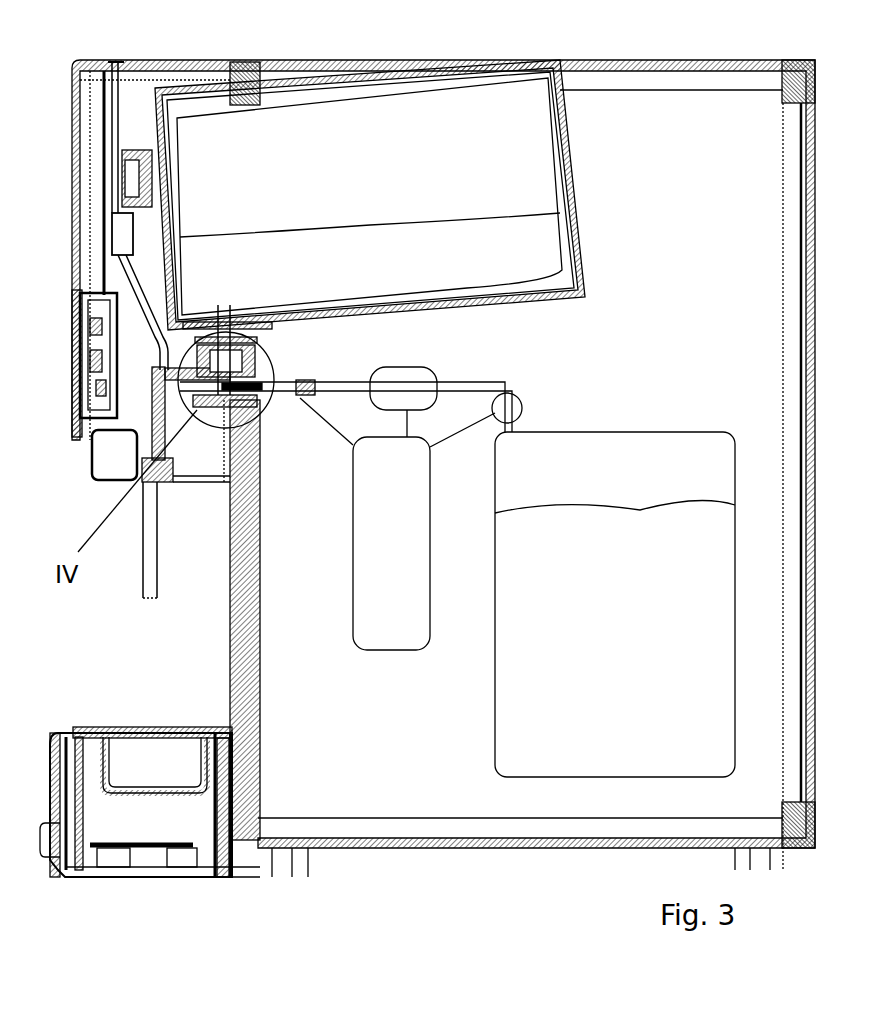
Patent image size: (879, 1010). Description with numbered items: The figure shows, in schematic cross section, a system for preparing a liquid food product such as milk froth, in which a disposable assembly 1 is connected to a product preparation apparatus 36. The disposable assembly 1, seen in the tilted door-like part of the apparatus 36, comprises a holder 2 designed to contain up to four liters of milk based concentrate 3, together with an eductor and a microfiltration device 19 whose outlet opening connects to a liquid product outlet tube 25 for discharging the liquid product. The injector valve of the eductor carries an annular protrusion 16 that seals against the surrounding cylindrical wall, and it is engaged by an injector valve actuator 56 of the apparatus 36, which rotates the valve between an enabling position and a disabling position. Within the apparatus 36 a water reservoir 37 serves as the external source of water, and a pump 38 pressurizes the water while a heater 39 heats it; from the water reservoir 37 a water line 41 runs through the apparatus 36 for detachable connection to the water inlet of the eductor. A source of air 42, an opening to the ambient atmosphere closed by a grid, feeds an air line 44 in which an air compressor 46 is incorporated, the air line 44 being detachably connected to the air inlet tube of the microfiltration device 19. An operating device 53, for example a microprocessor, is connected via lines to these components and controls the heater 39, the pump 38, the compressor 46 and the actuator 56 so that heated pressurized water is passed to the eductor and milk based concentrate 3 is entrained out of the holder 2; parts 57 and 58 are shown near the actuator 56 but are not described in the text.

The disposable assembly 1 is at (575, 148).
The holder 2 is at (562, 268).
The milk based concentrate 3 is at (356, 270).
The annular protrusion 16 is at (155, 368).
The microfiltration device 19 is at (155, 382).
The liquid product outlet tube 25 is at (157, 558).
The product preparation apparatus 36 is at (463, 806).
The water reservoir 37 is at (620, 490).
The pump 38 is at (522, 408).
The heater 39 is at (412, 365).
The water line 41 is at (343, 382).
The source of air 42 is at (113, 60).
The air line 44 is at (113, 140).
The air compressor 46 is at (122, 236).
The operating device 53 is at (408, 564).
The injector valve actuator 56 is at (270, 393).
The seal 57 is at (236, 382).
The coupling 58 is at (268, 397).